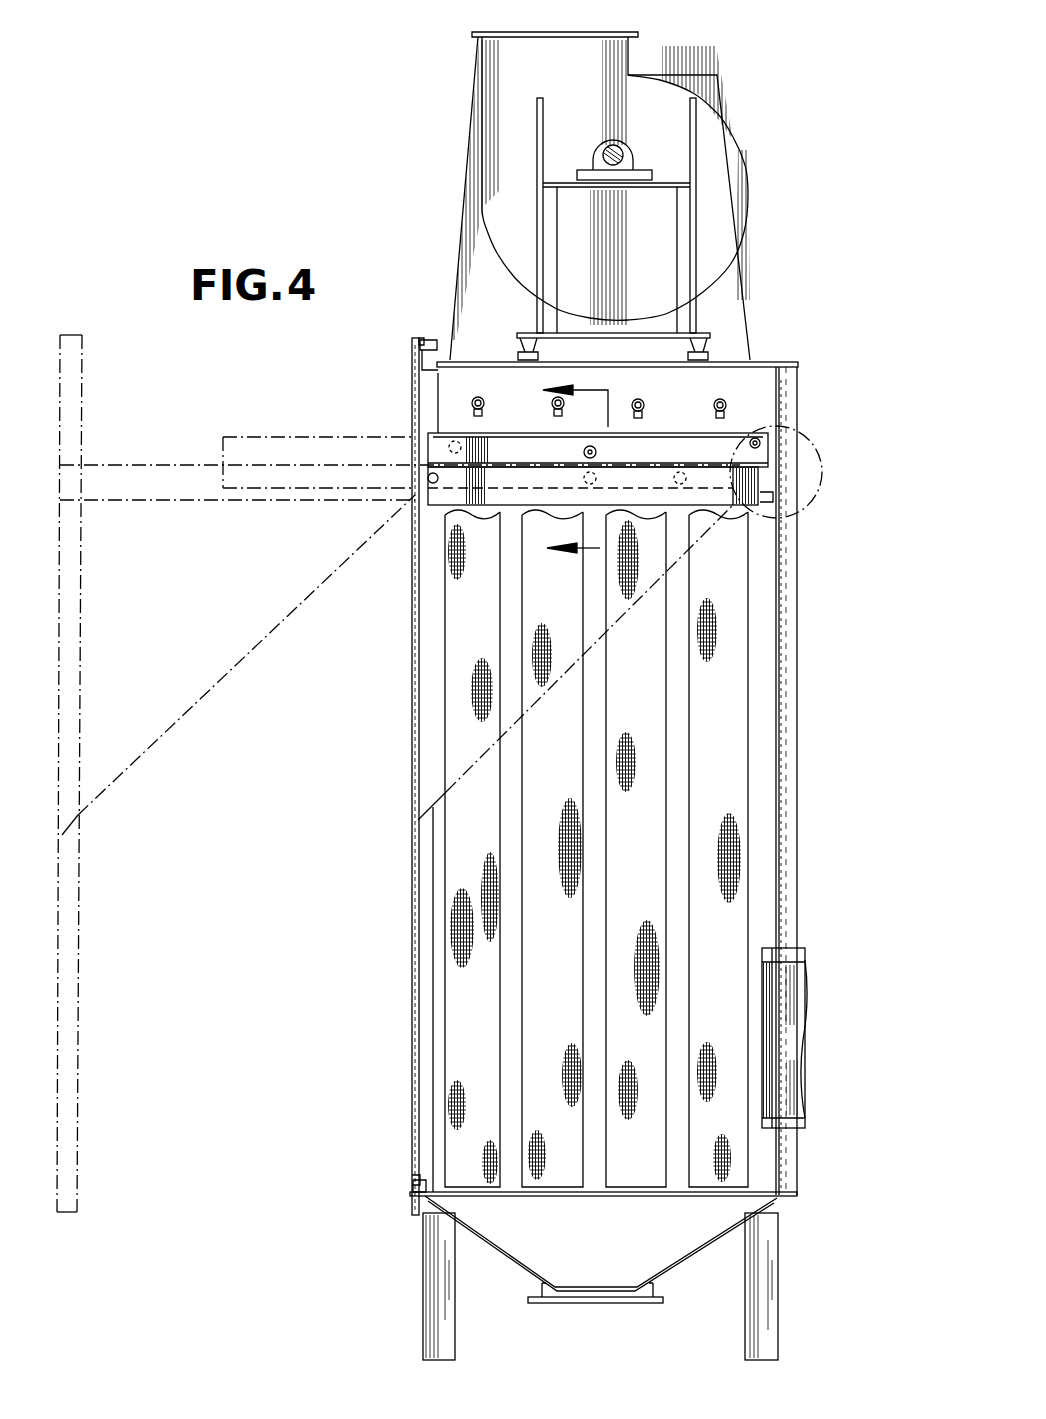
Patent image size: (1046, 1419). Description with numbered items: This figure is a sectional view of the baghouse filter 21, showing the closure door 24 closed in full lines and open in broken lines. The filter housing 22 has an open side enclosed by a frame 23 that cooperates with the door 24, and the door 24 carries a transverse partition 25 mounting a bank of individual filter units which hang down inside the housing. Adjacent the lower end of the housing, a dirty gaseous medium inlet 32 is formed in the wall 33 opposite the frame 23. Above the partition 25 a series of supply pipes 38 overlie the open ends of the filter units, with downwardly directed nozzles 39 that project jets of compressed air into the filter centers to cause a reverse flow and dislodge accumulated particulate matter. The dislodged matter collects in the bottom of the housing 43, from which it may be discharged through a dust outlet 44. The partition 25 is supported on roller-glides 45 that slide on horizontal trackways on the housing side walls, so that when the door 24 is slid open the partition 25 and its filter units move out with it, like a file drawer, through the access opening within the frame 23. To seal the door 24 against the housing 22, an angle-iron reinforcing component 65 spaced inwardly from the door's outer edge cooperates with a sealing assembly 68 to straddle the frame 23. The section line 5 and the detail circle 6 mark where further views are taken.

The baghouse filter 21 is at (750, 308).
The filter housing 22 is at (783, 720).
The frame 23 is at (430, 346).
The closure door 24 is at (80, 400).
The transverse partition 25 is at (128, 462).
The inlet 32 is at (776, 1025).
The wall 33 is at (785, 850).
The supply pipes 38 is at (553, 408).
The nozzles 39 is at (718, 410).
The bottom of the housing 43 is at (708, 1250).
The dust outlet 44 is at (556, 1303).
The roller-glides 45 is at (345, 437).
The angle-iron reinforcing component 65 is at (413, 1183).
The sealing assembly 68 is at (423, 340).
The section line 5 is at (563, 472).
The detail circle 6 is at (818, 507).